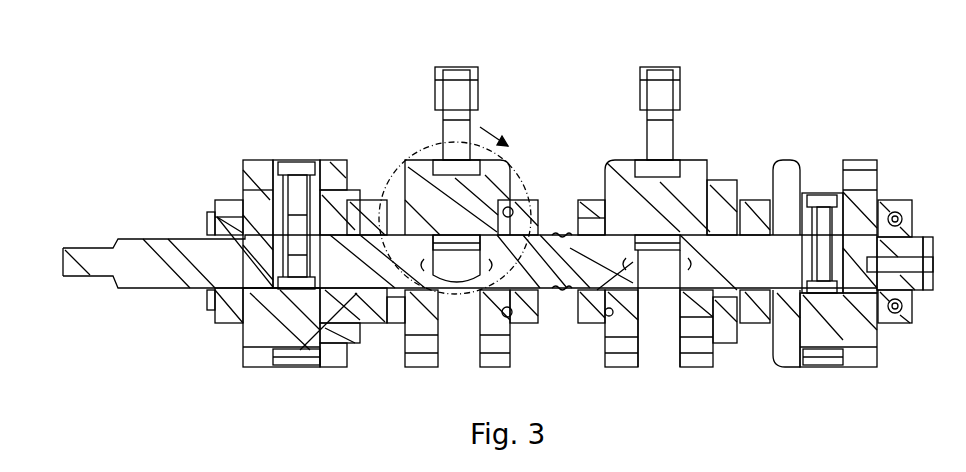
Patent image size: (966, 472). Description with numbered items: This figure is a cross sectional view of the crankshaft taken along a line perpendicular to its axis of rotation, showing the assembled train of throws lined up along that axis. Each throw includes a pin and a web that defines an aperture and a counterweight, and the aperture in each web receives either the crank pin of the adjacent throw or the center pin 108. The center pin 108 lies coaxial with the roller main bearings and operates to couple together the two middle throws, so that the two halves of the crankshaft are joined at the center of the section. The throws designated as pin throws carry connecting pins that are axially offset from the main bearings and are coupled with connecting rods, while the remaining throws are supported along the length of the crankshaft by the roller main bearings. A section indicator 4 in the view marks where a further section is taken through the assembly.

The center pin 108 is at (558, 232).
The section view indicator 4 is at (502, 148).